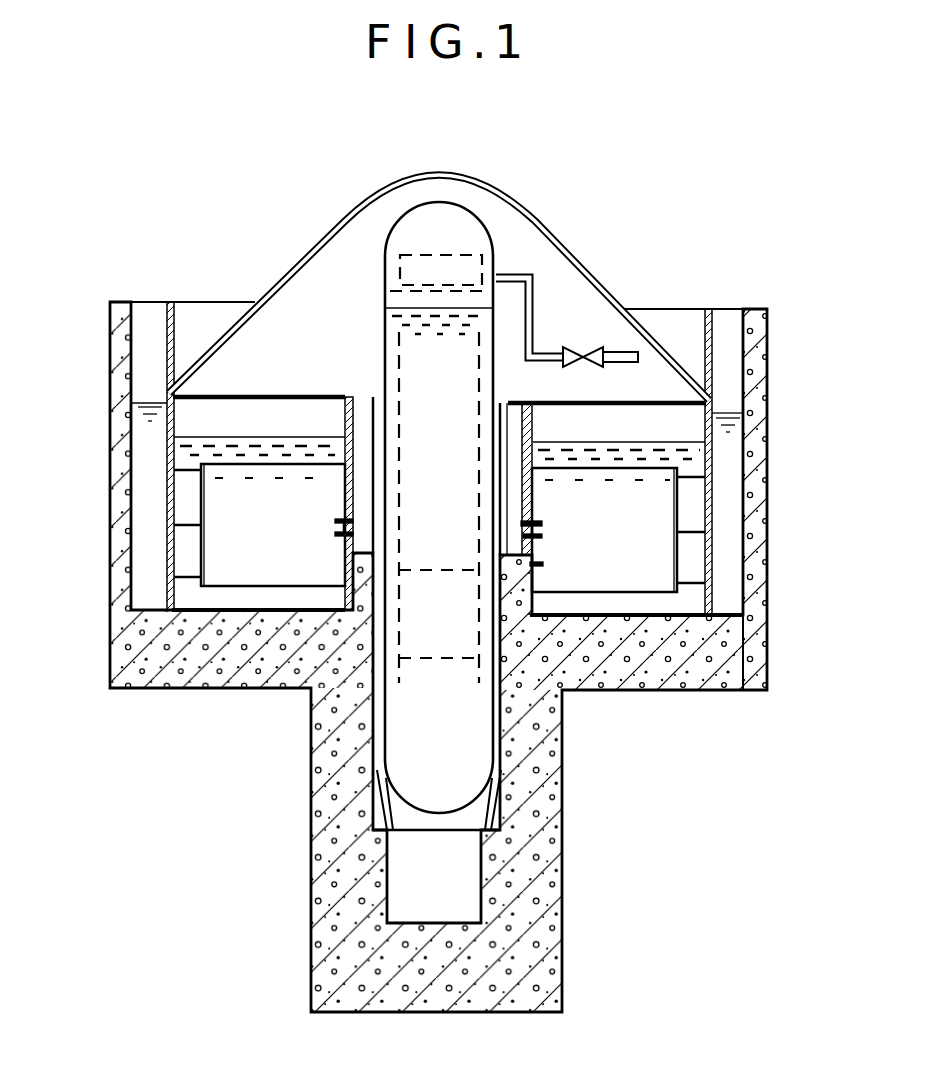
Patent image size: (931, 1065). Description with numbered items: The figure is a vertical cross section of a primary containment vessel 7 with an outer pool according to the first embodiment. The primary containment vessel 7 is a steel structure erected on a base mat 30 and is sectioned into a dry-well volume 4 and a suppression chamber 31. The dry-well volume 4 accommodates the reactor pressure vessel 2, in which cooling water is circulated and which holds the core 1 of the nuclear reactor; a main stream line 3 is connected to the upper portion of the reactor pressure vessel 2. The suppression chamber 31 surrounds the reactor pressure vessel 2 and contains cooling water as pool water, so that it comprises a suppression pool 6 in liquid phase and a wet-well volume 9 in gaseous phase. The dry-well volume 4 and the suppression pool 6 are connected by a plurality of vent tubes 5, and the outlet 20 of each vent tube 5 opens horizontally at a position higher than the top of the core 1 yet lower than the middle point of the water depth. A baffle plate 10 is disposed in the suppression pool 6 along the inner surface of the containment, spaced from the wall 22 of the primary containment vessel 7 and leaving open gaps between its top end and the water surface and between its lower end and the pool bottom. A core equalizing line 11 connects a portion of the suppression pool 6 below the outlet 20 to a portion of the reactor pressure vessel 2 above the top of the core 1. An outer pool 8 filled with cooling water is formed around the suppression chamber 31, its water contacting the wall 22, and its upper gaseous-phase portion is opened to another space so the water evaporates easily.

The core 1 is at (412, 637).
The reactor pressure vessel 2 is at (407, 242).
The main stream line 3 is at (531, 323).
The dry-well volume 4 is at (300, 310).
The vent tube 5 is at (367, 400).
The suppression pool 6 is at (220, 547).
The primary containment vessel 7 is at (560, 218).
The outer pool 8 is at (734, 557).
The wet-well volume 9 is at (218, 420).
The baffle plate 10 is at (205, 486).
The core equalizing line 11 is at (536, 540).
The outlet of the vent tube 20 is at (337, 540).
The wall of the primary containment vessel 22 is at (713, 520).
The base mat 30 is at (130, 688).
The suppression chamber 31 is at (652, 395).